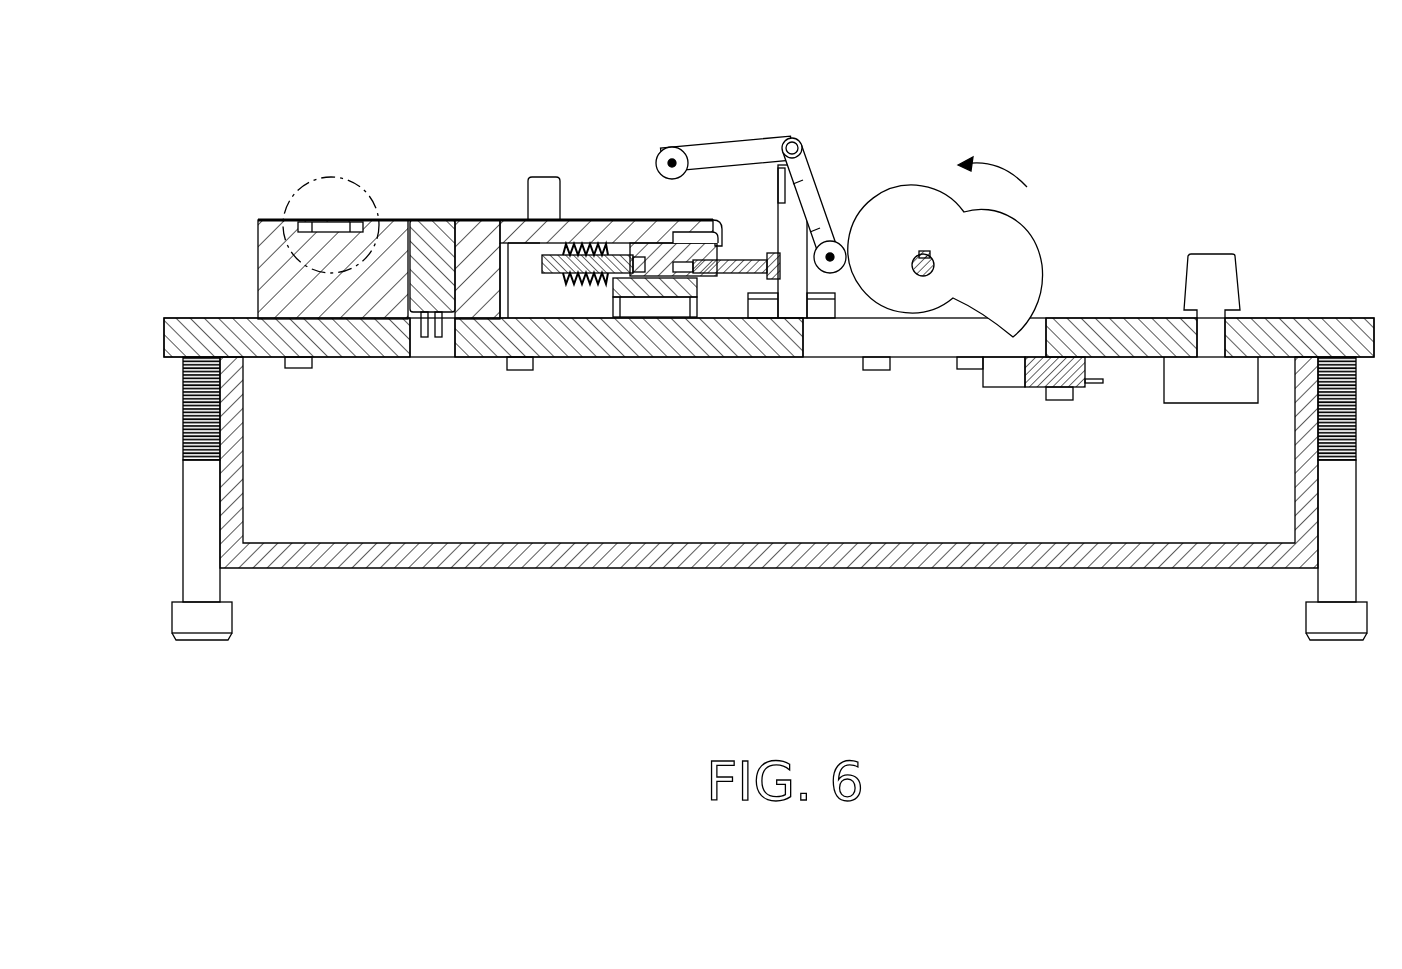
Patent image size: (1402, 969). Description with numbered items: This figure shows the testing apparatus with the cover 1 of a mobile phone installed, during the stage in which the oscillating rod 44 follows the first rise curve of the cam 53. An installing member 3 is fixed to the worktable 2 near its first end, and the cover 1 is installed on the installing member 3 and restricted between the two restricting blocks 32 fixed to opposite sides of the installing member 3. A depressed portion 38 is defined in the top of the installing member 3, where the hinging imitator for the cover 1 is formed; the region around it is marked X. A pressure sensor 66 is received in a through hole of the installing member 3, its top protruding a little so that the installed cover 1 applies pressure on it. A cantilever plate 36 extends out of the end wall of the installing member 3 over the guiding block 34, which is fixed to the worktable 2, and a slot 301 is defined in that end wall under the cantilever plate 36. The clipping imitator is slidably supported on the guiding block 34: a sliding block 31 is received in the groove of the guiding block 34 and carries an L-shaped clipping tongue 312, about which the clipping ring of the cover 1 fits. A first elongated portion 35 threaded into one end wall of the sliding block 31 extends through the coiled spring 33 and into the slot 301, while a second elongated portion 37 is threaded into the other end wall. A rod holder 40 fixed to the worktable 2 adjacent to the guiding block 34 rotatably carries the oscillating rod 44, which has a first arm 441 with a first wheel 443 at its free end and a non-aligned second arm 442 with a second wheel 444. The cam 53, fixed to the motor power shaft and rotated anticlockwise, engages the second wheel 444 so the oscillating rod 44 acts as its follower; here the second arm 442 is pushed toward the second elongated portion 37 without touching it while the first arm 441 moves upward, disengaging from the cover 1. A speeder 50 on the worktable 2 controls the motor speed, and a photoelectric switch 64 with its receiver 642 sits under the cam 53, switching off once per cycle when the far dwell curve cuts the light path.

The cover 1 is at (374, 228).
The worktable 2 is at (190, 346).
The installing member 3 is at (290, 272).
The sliding block 31 is at (662, 255).
The restricting blocks 32 is at (543, 185).
The coiled spring 33 is at (582, 282).
The guiding block 34 is at (660, 290).
The first elongated portion 35 is at (545, 280).
The cantilever plate 36 is at (604, 232).
The second elongated portion 37 is at (735, 273).
The depressed portion 38 is at (337, 228).
The rod holder 40 is at (793, 282).
The oscillating rod 44 is at (787, 333).
The first arm 441 is at (756, 140).
The second arm 442 is at (815, 168).
The first wheel 443 is at (672, 147).
The second wheel 444 is at (835, 272).
The speeder 50 is at (1215, 272).
The cam 53 is at (1040, 218).
The photoelectric switch 64 is at (1060, 385).
The receiver 642 is at (1003, 378).
The pressure sensor 66 is at (428, 222).
The slot 301 is at (520, 293).
The clipping tongue 312 is at (720, 238).
The detail region X is at (296, 198).